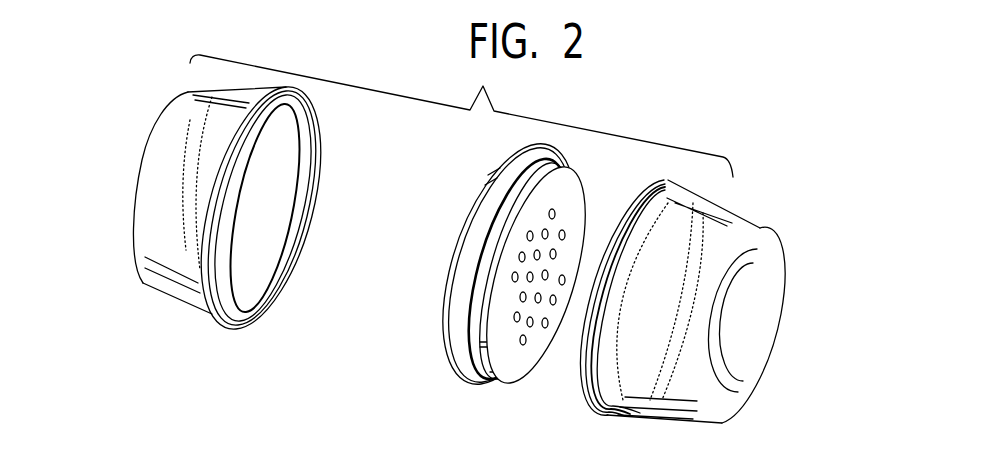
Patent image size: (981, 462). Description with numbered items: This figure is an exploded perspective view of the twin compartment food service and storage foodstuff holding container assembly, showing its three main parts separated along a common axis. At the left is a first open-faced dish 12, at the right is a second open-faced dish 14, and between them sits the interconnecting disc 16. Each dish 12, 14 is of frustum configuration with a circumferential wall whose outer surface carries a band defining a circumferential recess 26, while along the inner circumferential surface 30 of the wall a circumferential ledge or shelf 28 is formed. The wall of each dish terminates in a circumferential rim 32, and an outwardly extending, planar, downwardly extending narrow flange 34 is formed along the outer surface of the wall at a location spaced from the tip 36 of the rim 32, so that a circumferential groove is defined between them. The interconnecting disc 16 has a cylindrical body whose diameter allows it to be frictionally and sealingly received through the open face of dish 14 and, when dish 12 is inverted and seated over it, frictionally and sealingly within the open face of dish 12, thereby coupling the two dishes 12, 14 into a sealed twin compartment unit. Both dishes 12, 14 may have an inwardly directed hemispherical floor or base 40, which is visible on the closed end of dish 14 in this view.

The open-faced dish 12 is at (178, 293).
The open-faced dish 14 is at (697, 420).
The interconnecting disc 16 is at (482, 385).
The circumferential recess 26 is at (298, 205).
The circumferential ledge or shelf 28 is at (297, 148).
The inner circumferential surface 30 is at (281, 227).
The circumferential rim 32 is at (572, 417).
The flange 34 is at (222, 331).
The tip 36 is at (303, 247).
The hemispherical floor or base 40 is at (740, 322).